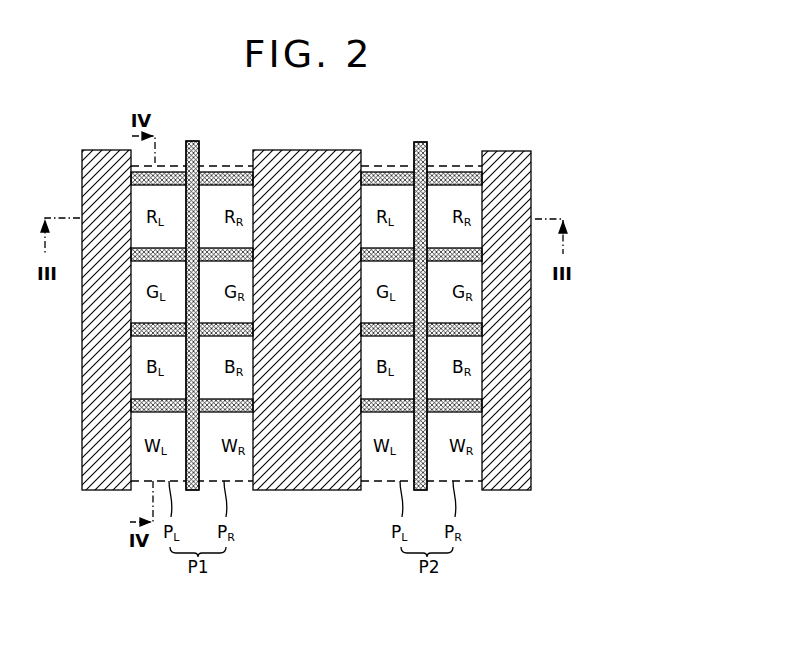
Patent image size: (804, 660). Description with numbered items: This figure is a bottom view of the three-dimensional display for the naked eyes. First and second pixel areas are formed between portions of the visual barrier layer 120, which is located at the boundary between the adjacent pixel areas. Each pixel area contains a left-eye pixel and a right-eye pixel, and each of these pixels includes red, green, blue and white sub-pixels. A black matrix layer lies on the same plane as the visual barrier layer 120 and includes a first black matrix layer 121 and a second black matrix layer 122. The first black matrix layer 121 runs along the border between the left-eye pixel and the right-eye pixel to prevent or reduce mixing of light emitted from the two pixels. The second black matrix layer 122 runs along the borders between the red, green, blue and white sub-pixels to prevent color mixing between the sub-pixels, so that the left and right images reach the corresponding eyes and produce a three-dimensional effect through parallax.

The visual barrier layer 120 is at (109, 158).
The first black matrix layer 121 is at (193, 141).
The second black matrix layer 122 is at (227, 178).